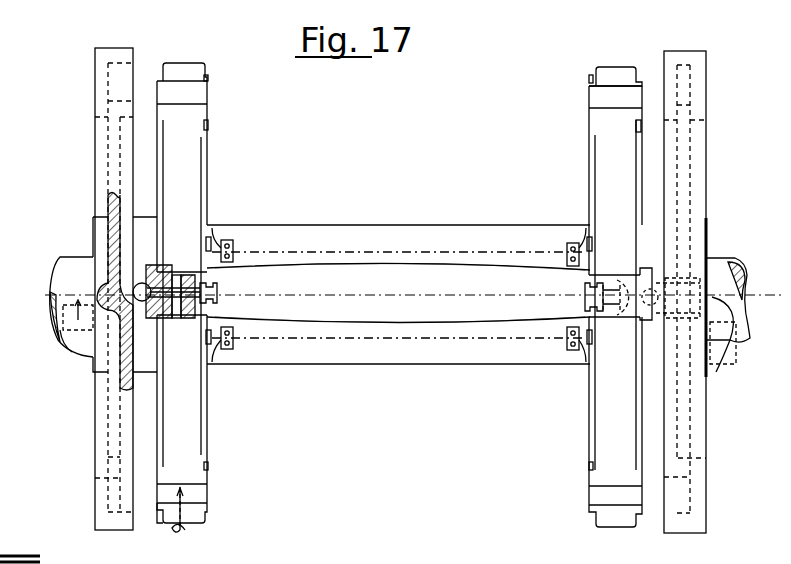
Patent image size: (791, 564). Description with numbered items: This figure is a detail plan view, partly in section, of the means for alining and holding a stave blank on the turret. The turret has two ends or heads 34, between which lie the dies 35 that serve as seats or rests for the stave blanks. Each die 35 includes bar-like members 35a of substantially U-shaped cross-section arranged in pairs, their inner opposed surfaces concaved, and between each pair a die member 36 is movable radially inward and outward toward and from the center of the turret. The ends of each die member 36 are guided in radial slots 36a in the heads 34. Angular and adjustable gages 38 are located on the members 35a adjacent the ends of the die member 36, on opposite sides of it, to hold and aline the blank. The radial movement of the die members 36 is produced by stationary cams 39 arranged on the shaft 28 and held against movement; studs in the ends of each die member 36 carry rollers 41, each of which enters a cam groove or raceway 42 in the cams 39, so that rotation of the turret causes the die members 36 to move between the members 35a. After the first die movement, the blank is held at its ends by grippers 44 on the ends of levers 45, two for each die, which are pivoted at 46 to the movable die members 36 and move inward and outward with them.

The shaft 28 is at (728, 308).
The turret head 34 is at (188, 450).
The die 35 is at (398, 275).
The bar-like die member 35a is at (405, 238).
The die member 36 is at (352, 305).
The radial slot 36a is at (596, 98).
The gage 38 is at (230, 245).
The cam 39 is at (97, 458).
The roller 41 is at (680, 280).
The cam groove 42 is at (112, 484).
The gripper 44 is at (215, 288).
The lever 45 is at (188, 318).
The pivot 46 is at (176, 275).